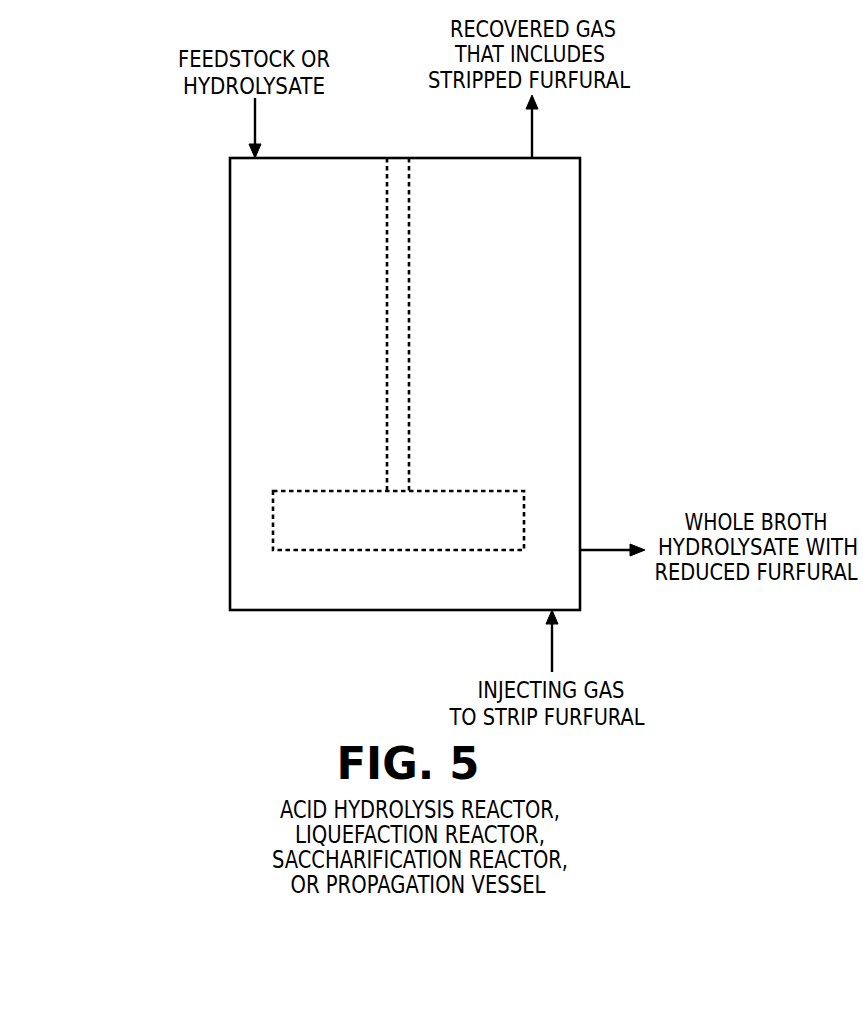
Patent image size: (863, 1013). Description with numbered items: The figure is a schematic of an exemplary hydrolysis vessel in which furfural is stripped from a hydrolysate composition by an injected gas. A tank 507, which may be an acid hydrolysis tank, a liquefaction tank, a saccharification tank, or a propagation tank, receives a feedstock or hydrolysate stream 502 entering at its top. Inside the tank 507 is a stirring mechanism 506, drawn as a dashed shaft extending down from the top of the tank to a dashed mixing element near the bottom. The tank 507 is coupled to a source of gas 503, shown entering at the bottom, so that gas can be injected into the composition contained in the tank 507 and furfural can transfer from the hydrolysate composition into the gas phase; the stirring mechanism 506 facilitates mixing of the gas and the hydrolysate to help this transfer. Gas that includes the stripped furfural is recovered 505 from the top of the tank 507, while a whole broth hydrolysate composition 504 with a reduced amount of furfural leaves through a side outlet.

The feedstock or hydrolysate inlet 502 is at (255, 118).
The source of gas 503 is at (552, 641).
The hydrolysate composition 504 is at (620, 548).
The recovered gas 505 is at (532, 127).
The stirring mechanism 506 is at (409, 305).
The tank 507 is at (230, 377).